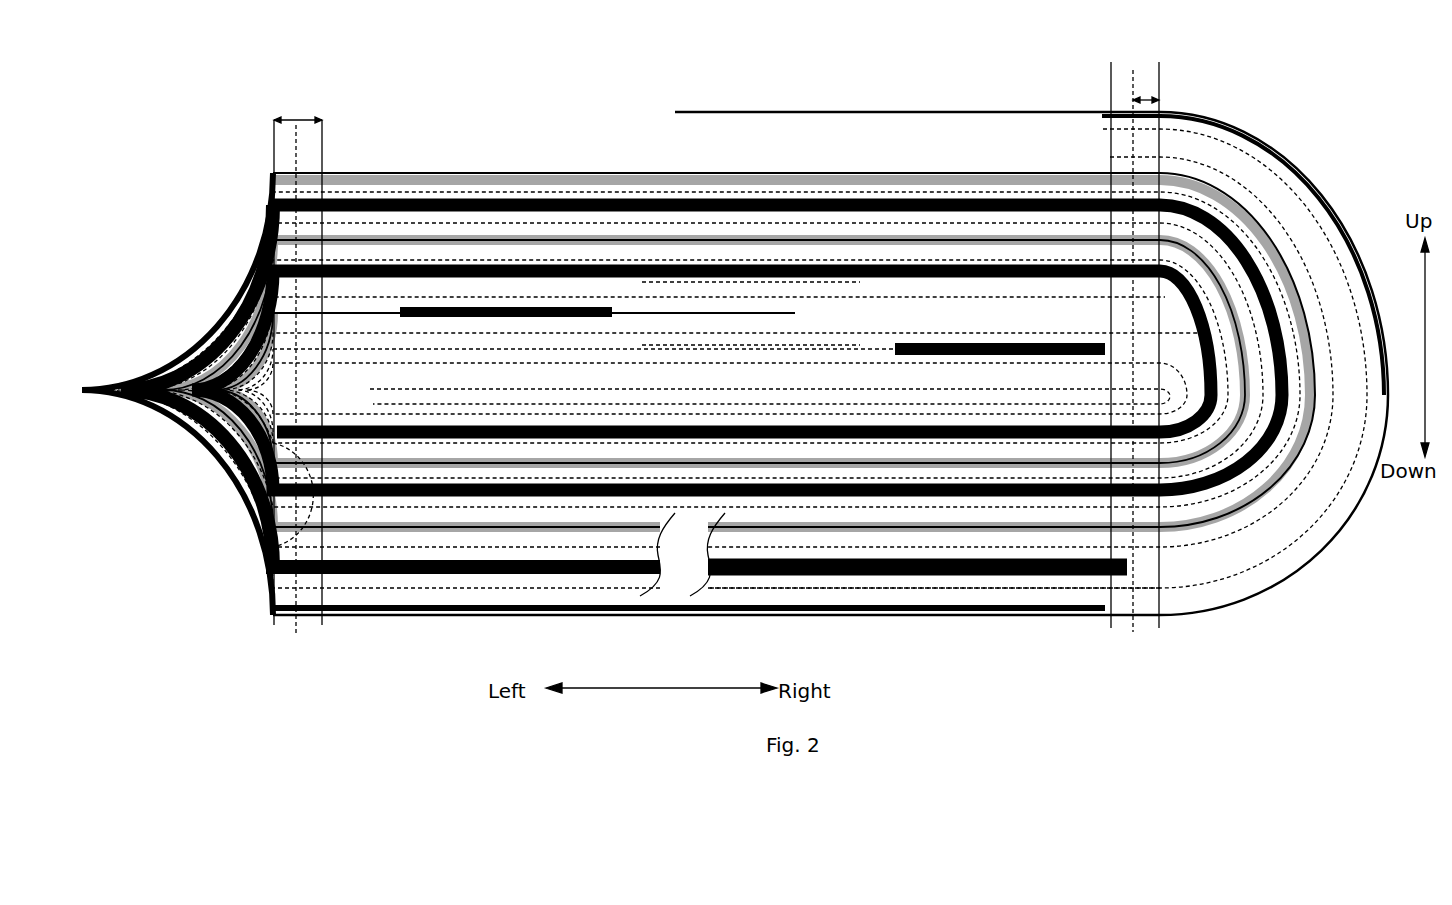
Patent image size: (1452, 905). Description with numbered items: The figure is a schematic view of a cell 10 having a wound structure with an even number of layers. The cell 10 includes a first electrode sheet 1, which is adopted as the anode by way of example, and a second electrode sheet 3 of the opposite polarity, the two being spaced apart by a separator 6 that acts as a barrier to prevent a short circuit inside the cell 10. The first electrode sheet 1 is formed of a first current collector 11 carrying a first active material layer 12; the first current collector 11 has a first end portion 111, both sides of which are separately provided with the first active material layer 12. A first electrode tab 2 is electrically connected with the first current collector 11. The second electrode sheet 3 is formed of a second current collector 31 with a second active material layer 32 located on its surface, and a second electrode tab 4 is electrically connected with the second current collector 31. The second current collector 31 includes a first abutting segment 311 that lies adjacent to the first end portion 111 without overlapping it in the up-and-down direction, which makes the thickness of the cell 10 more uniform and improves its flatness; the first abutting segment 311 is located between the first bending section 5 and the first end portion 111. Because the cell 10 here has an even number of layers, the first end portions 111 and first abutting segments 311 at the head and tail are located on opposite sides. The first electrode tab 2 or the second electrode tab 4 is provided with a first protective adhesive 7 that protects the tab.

The cell 10 is at (690, 36).
The first electrode sheet 1 is at (612, 197).
The first current collector 11 is at (772, 200).
The first end portion 111 is at (303, 118).
The first active material layer 12 is at (690, 203).
The first electrode tab 2 is at (1005, 344).
The second electrode sheet 3 is at (845, 616).
The second current collector 31 is at (925, 613).
The second active material layer 32 is at (1000, 605).
The first abutting segment 311 is at (1146, 97).
The second electrode tab 4 is at (522, 307).
The first bending section 5 is at (1276, 134).
The separator 6 is at (905, 190).
The first protective adhesive 7 is at (437, 307).